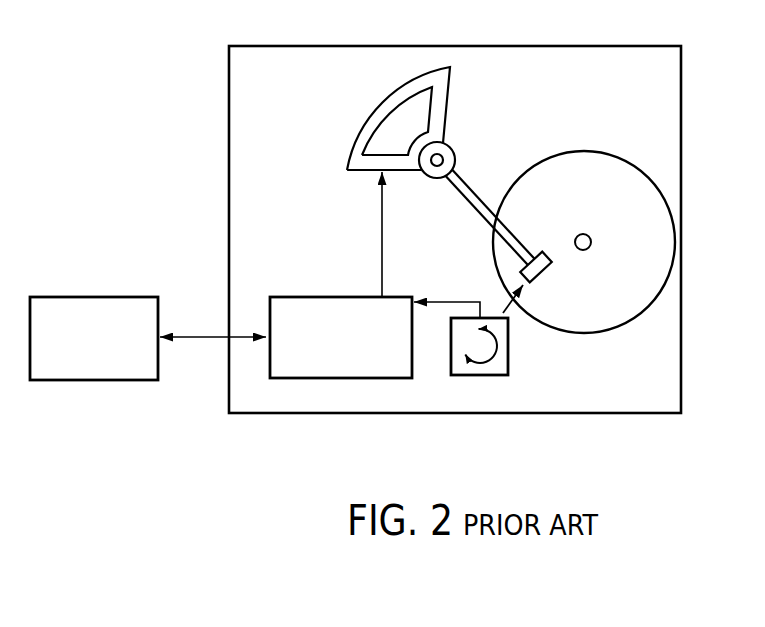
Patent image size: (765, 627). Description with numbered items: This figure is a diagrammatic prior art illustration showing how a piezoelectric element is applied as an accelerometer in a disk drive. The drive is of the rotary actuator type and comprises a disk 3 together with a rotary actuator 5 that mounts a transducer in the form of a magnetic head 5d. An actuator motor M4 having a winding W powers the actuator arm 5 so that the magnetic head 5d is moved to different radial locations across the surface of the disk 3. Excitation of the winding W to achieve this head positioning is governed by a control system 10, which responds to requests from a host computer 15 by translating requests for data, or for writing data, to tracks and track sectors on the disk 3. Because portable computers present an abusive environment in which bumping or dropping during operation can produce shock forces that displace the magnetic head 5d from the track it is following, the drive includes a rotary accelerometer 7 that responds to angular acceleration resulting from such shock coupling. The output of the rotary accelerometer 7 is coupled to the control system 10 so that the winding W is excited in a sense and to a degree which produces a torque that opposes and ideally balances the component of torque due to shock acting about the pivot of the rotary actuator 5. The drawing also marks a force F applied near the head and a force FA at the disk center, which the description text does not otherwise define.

The host computer 15 is at (140, 376).
The control system 10 is at (279, 297).
The rotary accelerometer 7 is at (495, 375).
The force applied to actuator F is at (507, 307).
The disk 3 is at (662, 235).
The force at disk center (spindle) FA is at (557, 246).
The winding W is at (373, 104).
The actuator motor M4 is at (453, 66).
The rotary actuator 5 is at (484, 192).
The magnetic head 5d is at (547, 275).